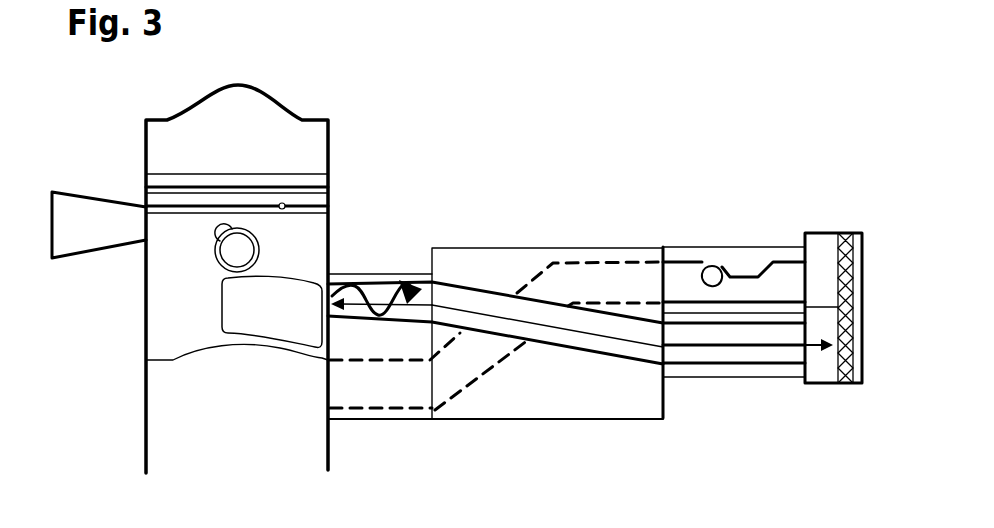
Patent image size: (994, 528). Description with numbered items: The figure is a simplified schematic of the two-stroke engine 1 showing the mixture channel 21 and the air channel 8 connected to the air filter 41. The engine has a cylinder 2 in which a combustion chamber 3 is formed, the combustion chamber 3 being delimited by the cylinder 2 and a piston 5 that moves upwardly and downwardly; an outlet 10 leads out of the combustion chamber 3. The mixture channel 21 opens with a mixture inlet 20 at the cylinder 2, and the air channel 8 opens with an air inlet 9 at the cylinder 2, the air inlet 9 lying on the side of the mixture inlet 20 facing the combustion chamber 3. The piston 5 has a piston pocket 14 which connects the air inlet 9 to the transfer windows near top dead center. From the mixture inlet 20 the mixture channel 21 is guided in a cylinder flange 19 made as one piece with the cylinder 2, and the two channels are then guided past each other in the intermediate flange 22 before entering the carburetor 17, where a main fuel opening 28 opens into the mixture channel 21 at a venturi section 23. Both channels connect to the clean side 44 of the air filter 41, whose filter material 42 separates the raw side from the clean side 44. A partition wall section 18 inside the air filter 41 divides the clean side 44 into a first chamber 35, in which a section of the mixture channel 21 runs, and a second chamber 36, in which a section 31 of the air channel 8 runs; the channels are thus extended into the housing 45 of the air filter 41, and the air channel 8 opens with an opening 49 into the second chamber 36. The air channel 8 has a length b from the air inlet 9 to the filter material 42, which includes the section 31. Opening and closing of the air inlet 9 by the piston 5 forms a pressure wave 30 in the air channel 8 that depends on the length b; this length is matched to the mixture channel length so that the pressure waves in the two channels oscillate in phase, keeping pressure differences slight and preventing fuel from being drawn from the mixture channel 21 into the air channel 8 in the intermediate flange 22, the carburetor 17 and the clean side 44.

The two-stroke engine 1 is at (336, 65).
The cylinder 2 is at (330, 143).
The combustion chamber 3 is at (244, 137).
The piston 5 is at (158, 318).
The air channel 8 is at (460, 297).
The air inlet 9 is at (335, 293).
The outlet 10 is at (138, 220).
The piston pocket 14 is at (284, 328).
The carburetor 17 is at (725, 368).
The partition wall section 18 is at (822, 303).
The cylinder flange 19 is at (395, 418).
The mixture inlet 20 is at (340, 393).
The mixture channel 21 is at (463, 372).
The intermediate flange 22 is at (588, 405).
The venturi section 23 is at (747, 277).
The main fuel opening 28 is at (712, 277).
The pressure wave 30 is at (370, 277).
The section of the air channel 31 is at (817, 350).
The first chamber 35 is at (830, 275).
The second chamber 36 is at (835, 362).
The air filter 41 is at (807, 217).
The filter material 42 is at (843, 237).
The clean side 44 is at (828, 373).
The housing 45 is at (860, 385).
The opening 49 is at (810, 333).
The length of the air channel b is at (568, 330).